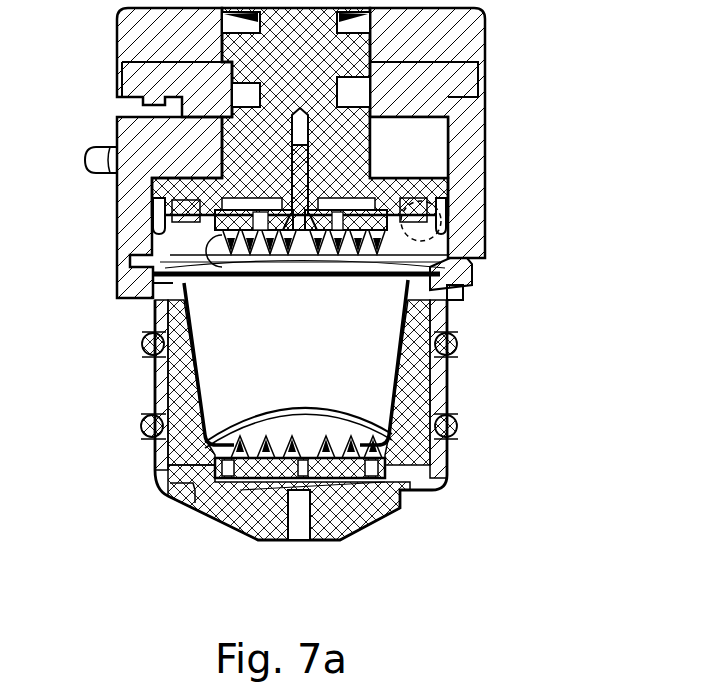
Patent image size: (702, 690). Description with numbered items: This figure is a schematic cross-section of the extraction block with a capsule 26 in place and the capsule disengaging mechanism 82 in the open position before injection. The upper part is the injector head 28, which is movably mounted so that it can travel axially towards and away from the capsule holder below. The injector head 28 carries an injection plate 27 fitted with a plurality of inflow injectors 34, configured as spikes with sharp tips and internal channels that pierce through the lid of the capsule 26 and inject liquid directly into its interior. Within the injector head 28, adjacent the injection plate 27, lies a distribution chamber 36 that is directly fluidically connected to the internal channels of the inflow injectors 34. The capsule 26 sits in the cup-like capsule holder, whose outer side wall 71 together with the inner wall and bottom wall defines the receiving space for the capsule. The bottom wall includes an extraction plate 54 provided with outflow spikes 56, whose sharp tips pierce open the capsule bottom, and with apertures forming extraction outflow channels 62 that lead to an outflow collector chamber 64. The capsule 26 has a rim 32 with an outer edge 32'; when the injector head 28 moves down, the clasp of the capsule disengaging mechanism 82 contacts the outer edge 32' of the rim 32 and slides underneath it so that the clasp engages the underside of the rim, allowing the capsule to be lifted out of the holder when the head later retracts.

The capsule 26 is at (351, 369).
The injection plate 27 is at (213, 215).
The injector head 28 is at (348, 160).
The rim 32 is at (493, 253).
The outer edge of the capsule rim 32' is at (505, 290).
The inflow injectors 34 is at (150, 266).
The distribution chamber 36 is at (367, 203).
The extraction plate 54 is at (340, 474).
The outflow spikes 56 is at (383, 470).
The extraction outflow channels 62 is at (229, 478).
The outflow collector chamber 64 is at (306, 523).
The outer side wall 71 is at (420, 322).
The capsule disengaging mechanism 82 is at (455, 220).